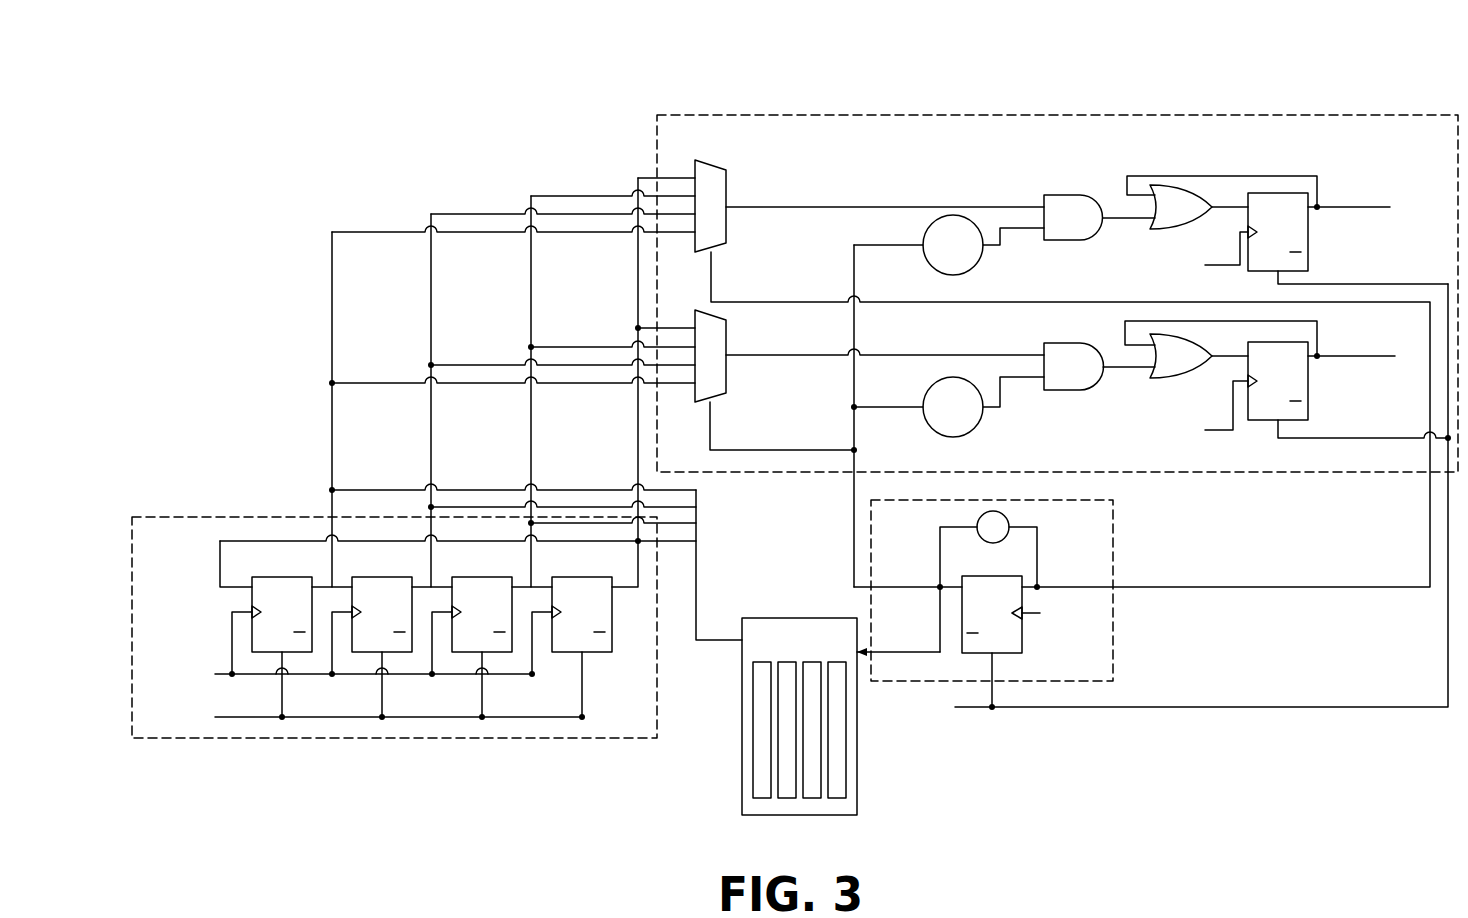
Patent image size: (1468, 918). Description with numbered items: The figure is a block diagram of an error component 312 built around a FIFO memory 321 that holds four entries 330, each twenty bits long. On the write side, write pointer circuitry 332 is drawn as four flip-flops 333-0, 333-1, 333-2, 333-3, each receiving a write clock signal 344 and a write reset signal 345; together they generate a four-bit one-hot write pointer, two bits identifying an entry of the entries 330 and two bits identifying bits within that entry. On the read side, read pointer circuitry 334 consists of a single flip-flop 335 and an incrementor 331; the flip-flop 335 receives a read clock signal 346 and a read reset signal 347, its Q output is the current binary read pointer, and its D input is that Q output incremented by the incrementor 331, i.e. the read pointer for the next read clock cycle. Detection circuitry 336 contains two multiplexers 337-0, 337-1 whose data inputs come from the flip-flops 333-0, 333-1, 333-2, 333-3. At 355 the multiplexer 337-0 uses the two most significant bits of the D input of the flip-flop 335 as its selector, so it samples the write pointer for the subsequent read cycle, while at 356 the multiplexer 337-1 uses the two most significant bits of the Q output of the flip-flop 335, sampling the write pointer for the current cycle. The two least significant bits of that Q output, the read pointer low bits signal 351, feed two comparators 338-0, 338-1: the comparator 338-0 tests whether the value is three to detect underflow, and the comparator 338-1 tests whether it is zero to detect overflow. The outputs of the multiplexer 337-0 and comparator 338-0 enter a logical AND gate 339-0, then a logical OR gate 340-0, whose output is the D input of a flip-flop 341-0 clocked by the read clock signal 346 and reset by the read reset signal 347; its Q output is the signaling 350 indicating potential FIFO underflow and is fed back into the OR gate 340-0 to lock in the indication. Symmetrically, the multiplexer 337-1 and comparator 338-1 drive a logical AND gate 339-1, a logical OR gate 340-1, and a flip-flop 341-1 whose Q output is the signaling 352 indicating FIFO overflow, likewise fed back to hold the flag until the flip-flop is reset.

The error component 312 is at (216, 196).
The FIFO memory 321 is at (800, 618).
The entries 330 is at (755, 798).
The incrementor 331 is at (1008, 519).
The write pointer circuitry 332 is at (228, 517).
The flip-flop 333-0 is at (262, 655).
The flip-flop 333-1 is at (362, 655).
The flip-flop 333-2 is at (462, 655).
The flip-flop 333-3 is at (562, 655).
The read pointer circuitry 334 is at (1116, 648).
The flip-flop 335 is at (1013, 655).
The detection circuitry 336 is at (1290, 115).
The multiplexer 337-0 is at (726, 172).
The multiplexer 337-1 is at (728, 312).
The comparator 338-0 is at (950, 278).
The comparator 338-1 is at (970, 382).
The logical AND gate 339-0 is at (1044, 197).
The logical AND gate 339-1 is at (1068, 391).
The logical OR gate 340-0 is at (1152, 180).
The logical OR gate 340-1 is at (1152, 380).
The flip-flop 341-0 is at (1310, 246).
The flip-flop 341-1 is at (1312, 400).
The write clock signal 344 is at (186, 660).
The write reset signal 345 is at (160, 724).
The read clock signal 346 is at (1150, 270).
The read reset signal 347 is at (913, 722).
The signaling 350 is at (1370, 192).
The read pointer low bits signal 351 is at (850, 296).
The signaling 352 is at (1375, 361).
The selector input of multiplexer 337-0 355 is at (711, 283).
The selector input of multiplexer 337-1 356 is at (710, 440).